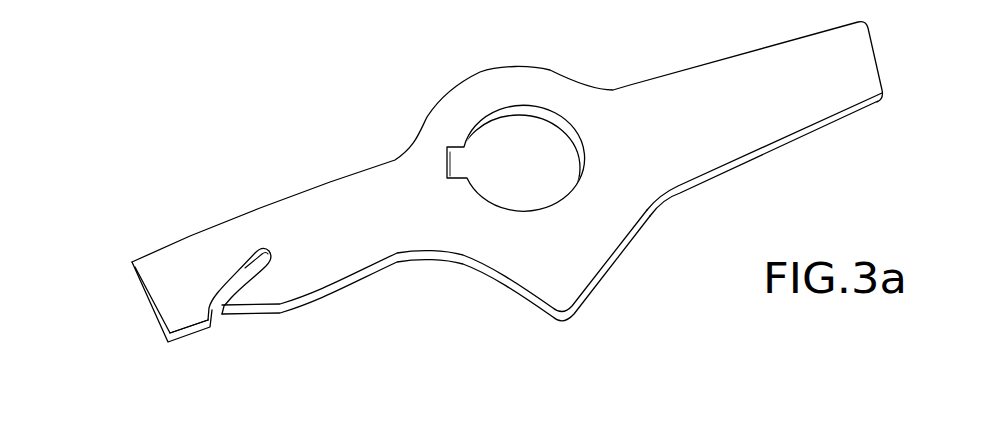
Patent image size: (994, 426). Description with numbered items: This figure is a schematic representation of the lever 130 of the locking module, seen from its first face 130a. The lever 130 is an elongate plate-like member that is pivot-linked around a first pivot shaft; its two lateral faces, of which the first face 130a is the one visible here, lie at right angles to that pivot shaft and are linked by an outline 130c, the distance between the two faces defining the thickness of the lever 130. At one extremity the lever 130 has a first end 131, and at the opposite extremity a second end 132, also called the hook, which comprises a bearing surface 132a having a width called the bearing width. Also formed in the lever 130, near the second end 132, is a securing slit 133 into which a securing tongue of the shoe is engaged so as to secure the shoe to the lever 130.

The lever 130 is at (140, 135).
The first face 130a is at (325, 197).
The outline 130c is at (460, 262).
The first end 131 is at (743, 72).
The second end 132 is at (168, 260).
The bearing surface 132a is at (188, 330).
The securing slit 133 is at (247, 282).